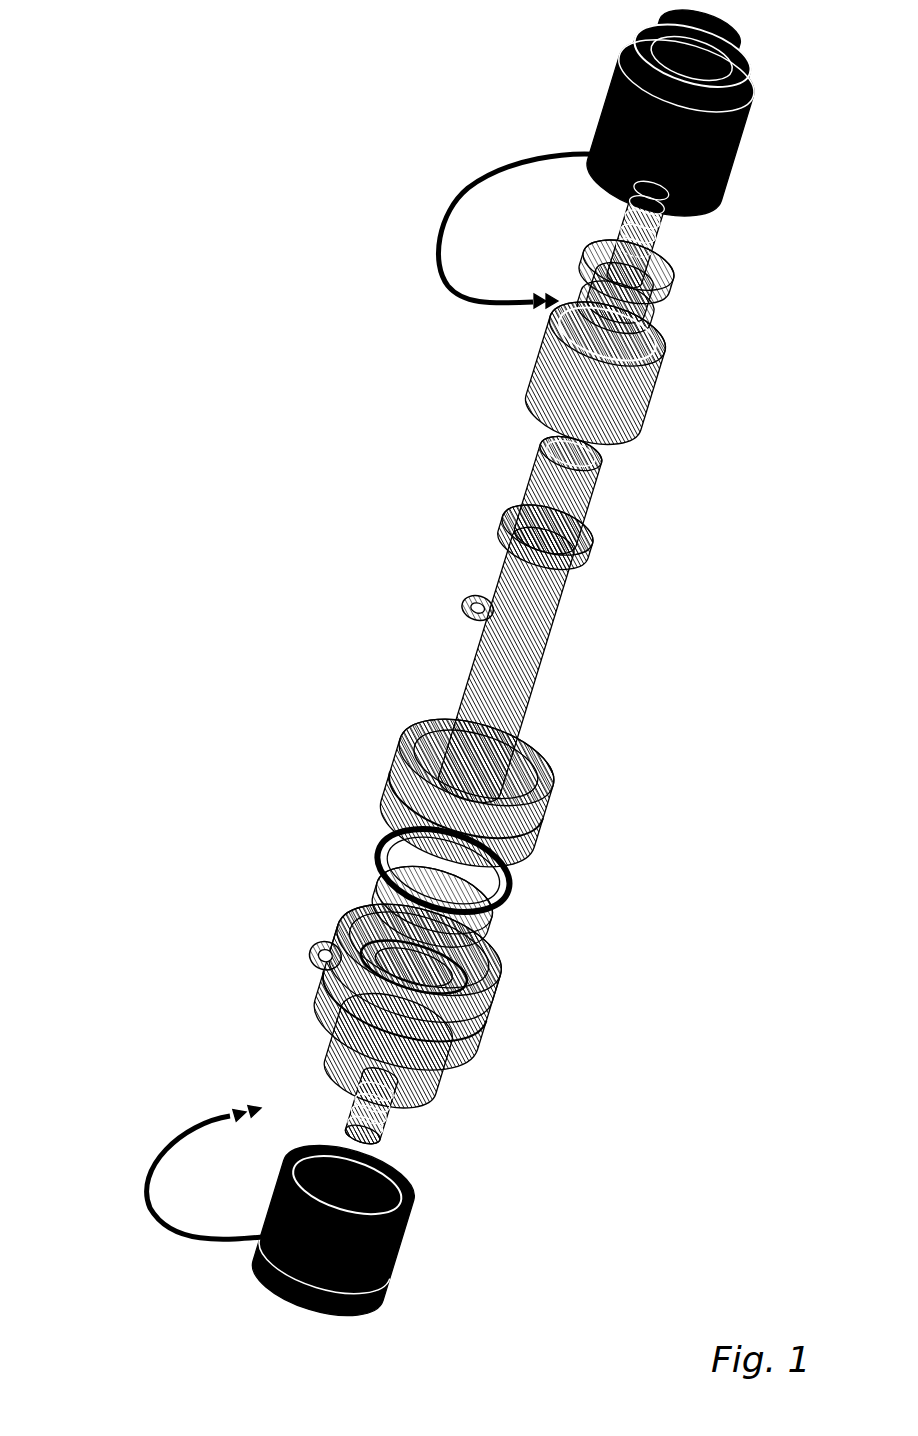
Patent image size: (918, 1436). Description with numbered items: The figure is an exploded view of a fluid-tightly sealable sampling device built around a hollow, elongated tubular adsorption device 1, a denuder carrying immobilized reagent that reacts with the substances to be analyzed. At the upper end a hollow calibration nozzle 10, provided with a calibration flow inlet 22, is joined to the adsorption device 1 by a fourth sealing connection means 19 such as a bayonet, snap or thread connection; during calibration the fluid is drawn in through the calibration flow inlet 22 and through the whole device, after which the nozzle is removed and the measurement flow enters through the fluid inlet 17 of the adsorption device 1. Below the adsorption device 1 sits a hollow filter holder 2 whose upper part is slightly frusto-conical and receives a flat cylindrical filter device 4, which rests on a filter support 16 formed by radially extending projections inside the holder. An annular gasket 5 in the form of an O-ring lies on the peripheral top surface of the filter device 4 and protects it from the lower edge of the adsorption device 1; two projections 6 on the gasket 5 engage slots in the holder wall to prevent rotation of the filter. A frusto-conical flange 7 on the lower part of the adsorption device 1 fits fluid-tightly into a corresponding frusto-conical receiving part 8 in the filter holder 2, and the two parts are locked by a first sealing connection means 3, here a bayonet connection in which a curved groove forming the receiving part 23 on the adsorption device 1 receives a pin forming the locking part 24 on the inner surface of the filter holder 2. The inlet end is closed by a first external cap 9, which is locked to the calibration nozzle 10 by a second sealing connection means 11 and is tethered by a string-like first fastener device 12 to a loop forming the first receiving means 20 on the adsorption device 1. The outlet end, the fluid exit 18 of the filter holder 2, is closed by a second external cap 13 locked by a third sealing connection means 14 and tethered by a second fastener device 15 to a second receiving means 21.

The adsorption device 1 is at (517, 683).
The filter holder 2 is at (463, 1028).
The first sealing connection means 3 is at (453, 933).
The filter device 4 is at (367, 887).
The gasket 5 is at (508, 913).
The projections 6 is at (390, 868).
The frusto-conical flange 7 is at (523, 810).
The frusto-conical receiving part 8 is at (375, 935).
The first external cap 9 is at (730, 192).
The calibration nozzle 10 is at (638, 372).
The second sealing connection means 11 is at (586, 290).
The first fastener device 12 is at (432, 217).
The second external cap 13 is at (367, 1289).
The third sealing connection means 14 is at (422, 1078).
The second fastener device 15 is at (140, 1171).
The filter support 16 is at (450, 943).
The fluid inlet 17 is at (573, 447).
The fluid exit 18 is at (357, 1130).
The fourth sealing connection means 19 is at (588, 533).
The first receiving means 20 is at (478, 596).
The second receiving means 21 is at (312, 952).
The calibration flow inlet 22 is at (655, 212).
The receiving part 23 is at (508, 850).
The locking part 24 is at (458, 945).